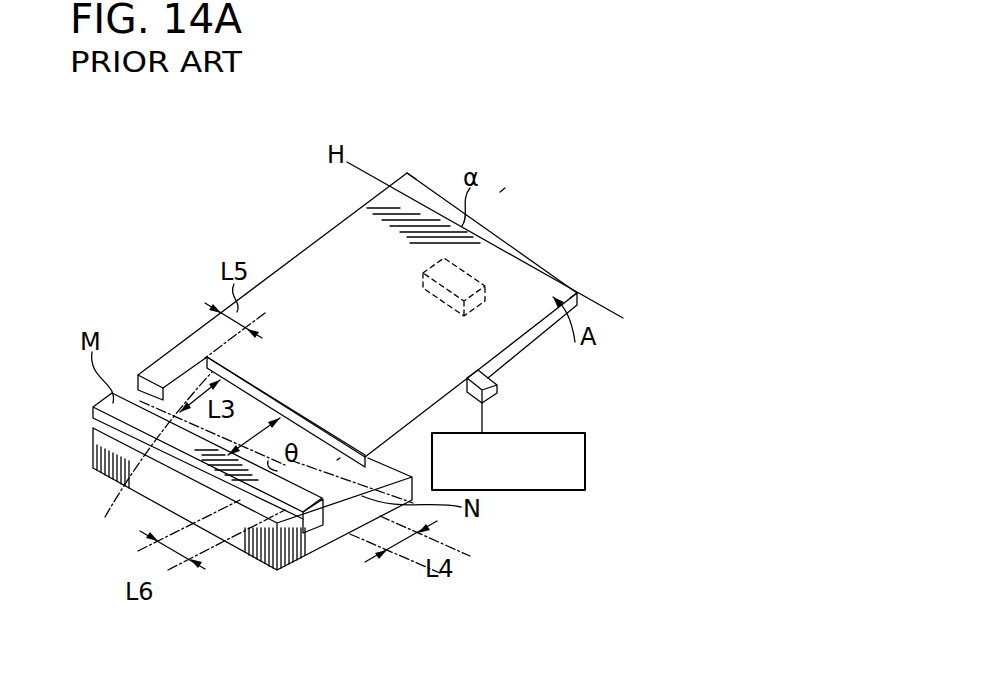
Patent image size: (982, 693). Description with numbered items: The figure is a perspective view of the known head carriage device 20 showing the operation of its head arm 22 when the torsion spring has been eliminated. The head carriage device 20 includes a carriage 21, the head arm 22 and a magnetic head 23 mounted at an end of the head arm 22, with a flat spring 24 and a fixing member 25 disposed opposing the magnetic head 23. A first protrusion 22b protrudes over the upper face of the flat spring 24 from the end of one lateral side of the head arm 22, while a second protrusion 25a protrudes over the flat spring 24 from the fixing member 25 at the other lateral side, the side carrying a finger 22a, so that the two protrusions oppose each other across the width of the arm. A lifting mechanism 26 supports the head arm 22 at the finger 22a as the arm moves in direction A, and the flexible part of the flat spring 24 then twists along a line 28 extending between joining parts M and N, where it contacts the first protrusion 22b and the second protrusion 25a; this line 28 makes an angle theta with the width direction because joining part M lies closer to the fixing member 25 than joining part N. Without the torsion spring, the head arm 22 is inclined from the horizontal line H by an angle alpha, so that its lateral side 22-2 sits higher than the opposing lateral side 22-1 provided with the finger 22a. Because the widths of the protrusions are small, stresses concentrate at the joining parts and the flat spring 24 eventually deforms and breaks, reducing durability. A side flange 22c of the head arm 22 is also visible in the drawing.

The head carriage device 20 is at (505, 188).
The carriage 21 is at (250, 548).
The head arm 22 is at (315, 280).
The lateral side 22-1 is at (578, 292).
The lateral side 22-2 is at (407, 170).
The finger 22a is at (497, 380).
The first protrusion 22b is at (140, 372).
The side flange of plate 22c is at (250, 382).
The magnetic head 23 is at (467, 270).
The flat spring 24 is at (337, 460).
The fixing member 25 is at (95, 406).
The second protrusion 25a is at (320, 521).
The lifting mechanism 26 is at (586, 458).
The line 28 is at (142, 457).